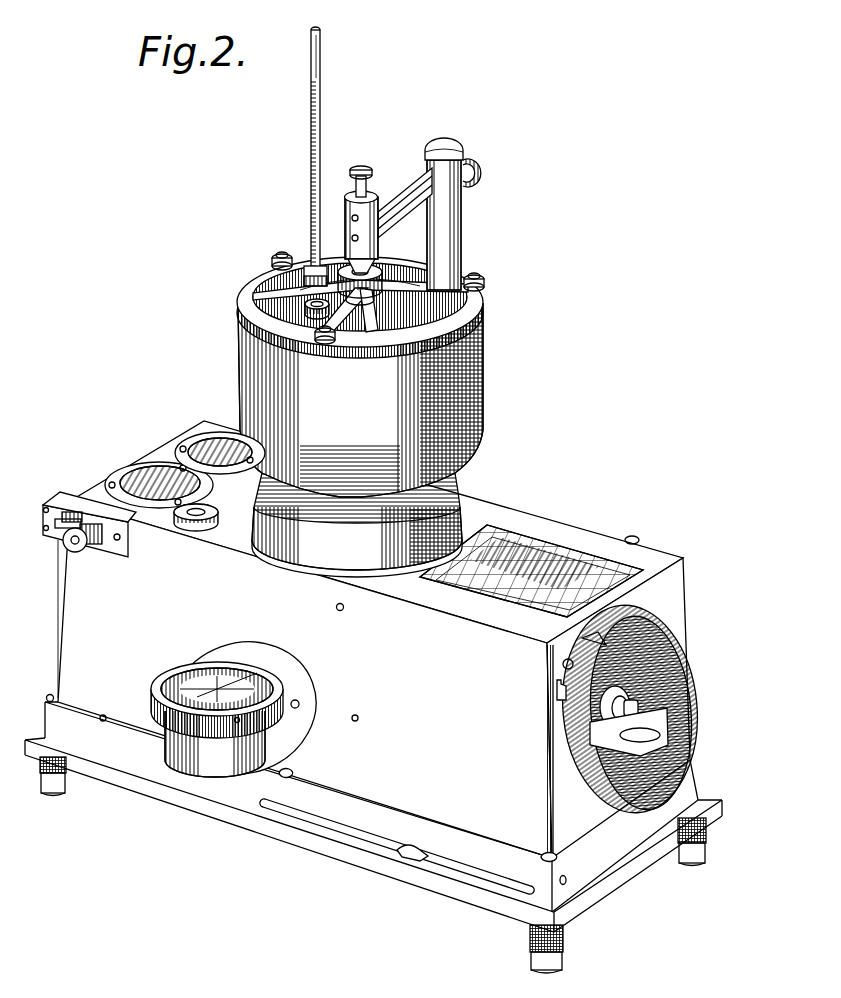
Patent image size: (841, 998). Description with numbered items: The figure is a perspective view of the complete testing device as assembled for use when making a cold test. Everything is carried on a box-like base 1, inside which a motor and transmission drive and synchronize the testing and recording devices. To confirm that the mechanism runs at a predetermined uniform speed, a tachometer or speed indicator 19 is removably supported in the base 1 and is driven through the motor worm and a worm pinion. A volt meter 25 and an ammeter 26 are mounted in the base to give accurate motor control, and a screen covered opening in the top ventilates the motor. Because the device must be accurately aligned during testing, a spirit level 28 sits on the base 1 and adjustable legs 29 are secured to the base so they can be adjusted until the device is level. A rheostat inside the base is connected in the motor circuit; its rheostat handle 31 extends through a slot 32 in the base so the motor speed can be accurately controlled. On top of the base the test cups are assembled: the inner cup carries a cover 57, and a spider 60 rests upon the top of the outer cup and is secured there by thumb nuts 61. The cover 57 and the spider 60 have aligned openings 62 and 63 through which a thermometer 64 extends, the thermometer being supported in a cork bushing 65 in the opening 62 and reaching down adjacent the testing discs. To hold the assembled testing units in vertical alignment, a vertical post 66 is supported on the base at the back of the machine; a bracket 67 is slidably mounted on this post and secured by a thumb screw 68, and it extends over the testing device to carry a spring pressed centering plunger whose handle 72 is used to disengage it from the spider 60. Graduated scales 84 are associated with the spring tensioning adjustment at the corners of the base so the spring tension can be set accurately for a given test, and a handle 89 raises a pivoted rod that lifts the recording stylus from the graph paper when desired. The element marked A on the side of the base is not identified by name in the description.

The box-like base 1 is at (567, 528).
The tachometer or speed indicator 19 is at (232, 784).
The volt meter 25 is at (206, 436).
The ammeter 26 is at (152, 478).
The spirit level 28 is at (203, 526).
The adjustable legs 29 is at (66, 777).
The rheostat handle 31 is at (410, 856).
The slot 32 is at (482, 868).
The cover 57 is at (378, 299).
The spider 60 is at (346, 305).
The thumb nuts 61 is at (282, 253).
The opening 62 is at (240, 328).
The opening 63 is at (262, 293).
The thermometer 64 is at (310, 188).
The cork bushing 65 is at (306, 304).
The vertical post 66 is at (462, 238).
The bracket 67 is at (404, 185).
The thumb screw 68 is at (480, 170).
The handle 72 is at (364, 182).
The graduated scales 84 is at (62, 512).
The handle 89 is at (555, 690).
The drum A is at (605, 675).